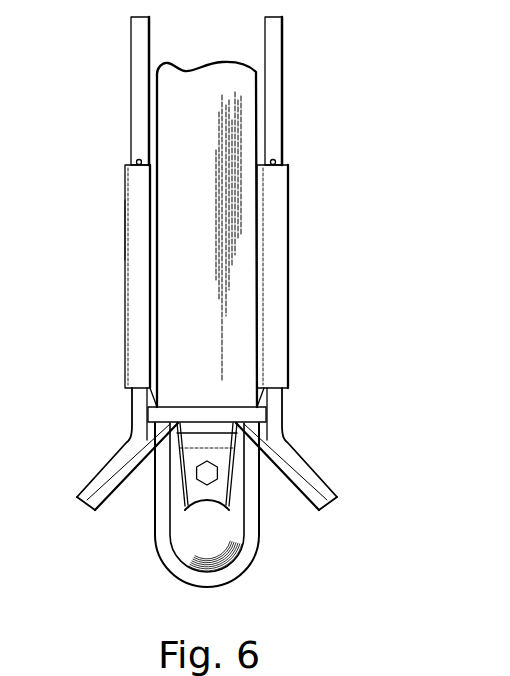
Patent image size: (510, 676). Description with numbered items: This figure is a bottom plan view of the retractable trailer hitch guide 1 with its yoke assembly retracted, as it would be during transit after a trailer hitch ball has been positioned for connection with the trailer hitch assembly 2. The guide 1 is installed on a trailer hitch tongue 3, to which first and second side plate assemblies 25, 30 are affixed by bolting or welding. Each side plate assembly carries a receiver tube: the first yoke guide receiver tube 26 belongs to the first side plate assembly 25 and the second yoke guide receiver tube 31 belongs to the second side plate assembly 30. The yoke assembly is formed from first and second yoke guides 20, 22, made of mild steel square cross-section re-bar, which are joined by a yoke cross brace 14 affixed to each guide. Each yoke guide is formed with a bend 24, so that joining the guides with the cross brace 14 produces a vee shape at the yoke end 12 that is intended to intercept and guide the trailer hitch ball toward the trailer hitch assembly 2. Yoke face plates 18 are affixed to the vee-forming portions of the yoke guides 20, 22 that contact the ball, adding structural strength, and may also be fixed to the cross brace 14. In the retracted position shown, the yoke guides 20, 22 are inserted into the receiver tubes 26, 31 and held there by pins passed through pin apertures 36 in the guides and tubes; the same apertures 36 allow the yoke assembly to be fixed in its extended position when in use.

The retractable trailer hitch guide 1 is at (320, 95).
The trailer hitch assembly 2 is at (160, 572).
The trailer hitch tongue 3 is at (177, 77).
The yoke end 12 is at (142, 506).
The yoke cross brace 14 is at (223, 406).
The yoke face plates 18 is at (100, 523).
The first yoke guide 20 is at (277, 42).
The second yoke guide 22 is at (135, 50).
The bend 24 is at (135, 432).
The first side plate assembly 25 is at (300, 259).
The first yoke guide receiver tube 26 is at (278, 292).
The second side plate assembly 30 is at (110, 271).
The second yoke guide receiver tube 31 is at (137, 315).
The pin apertures 36 is at (136, 159).